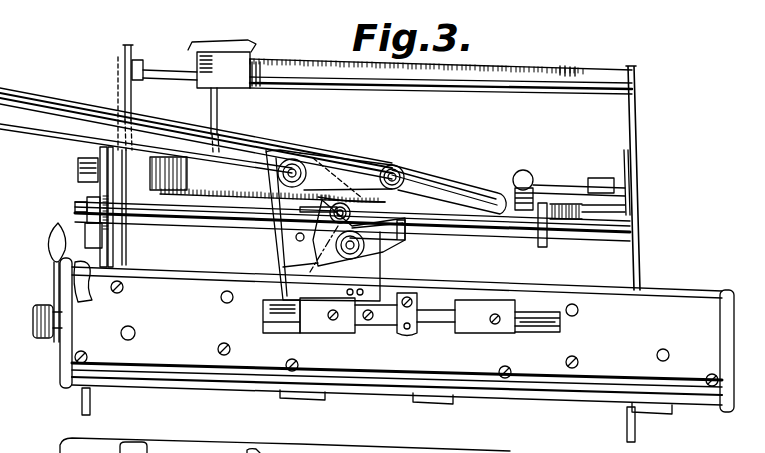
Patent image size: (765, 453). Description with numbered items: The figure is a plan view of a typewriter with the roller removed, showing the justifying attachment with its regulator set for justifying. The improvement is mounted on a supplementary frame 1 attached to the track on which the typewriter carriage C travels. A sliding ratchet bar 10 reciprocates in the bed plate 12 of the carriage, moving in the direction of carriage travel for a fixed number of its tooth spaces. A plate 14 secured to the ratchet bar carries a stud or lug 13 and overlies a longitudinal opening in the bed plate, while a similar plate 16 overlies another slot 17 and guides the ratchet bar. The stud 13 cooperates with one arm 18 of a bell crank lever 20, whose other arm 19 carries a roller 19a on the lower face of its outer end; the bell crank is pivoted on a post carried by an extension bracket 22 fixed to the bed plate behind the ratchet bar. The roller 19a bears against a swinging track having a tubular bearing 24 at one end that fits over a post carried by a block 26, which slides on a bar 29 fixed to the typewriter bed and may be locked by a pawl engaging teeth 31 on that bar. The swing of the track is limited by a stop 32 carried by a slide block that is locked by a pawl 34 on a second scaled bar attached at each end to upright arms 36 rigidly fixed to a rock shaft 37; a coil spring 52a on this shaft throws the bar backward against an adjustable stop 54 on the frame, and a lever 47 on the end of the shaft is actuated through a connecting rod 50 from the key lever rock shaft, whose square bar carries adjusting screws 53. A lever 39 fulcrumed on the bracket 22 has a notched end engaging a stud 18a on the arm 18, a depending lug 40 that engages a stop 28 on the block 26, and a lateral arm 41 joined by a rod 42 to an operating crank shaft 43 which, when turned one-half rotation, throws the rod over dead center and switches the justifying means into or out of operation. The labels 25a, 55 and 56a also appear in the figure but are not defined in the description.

The supplementary frame 1 is at (108, 258).
The sliding ratchet bar 10 is at (560, 316).
The bed plate 12 is at (640, 298).
The stud or lug 13 is at (280, 322).
The plate 14 is at (330, 322).
The plate 16 is at (490, 332).
The slot or opening 17 is at (550, 333).
The arm 18 is at (295, 237).
The stud 18a is at (290, 250).
The arm 19 is at (384, 167).
The roller 19a is at (420, 167).
The bell crank lever 20 is at (368, 160).
The extension bracket 22 is at (297, 150).
The tubular bearing 24 is at (528, 171).
The cylinder 25a is at (520, 214).
The block 26 is at (532, 235).
The stop 28 is at (548, 243).
The bar 29 is at (627, 219).
The teeth 31 is at (592, 208).
The stop 32 is at (211, 96).
The pawl 34 is at (228, 37).
The upright arm 36 is at (131, 46).
The rock shaft 37 is at (585, 172).
The lever 39 is at (449, 189).
The lug 40 is at (408, 236).
The arm 41 is at (359, 249).
The rod 42 is at (336, 199).
The operating crank shaft 43 is at (340, 213).
The lever 47 is at (92, 173).
The connecting rod 50 is at (65, 269).
The coil spring 52a is at (187, 157).
The adjusting screws 53 is at (256, 57).
The adjustable stop 54 is at (122, 83).
The scale bar 55 is at (498, 77).
The graduations 56a is at (575, 71).
The typewriter carriage C is at (671, 322).